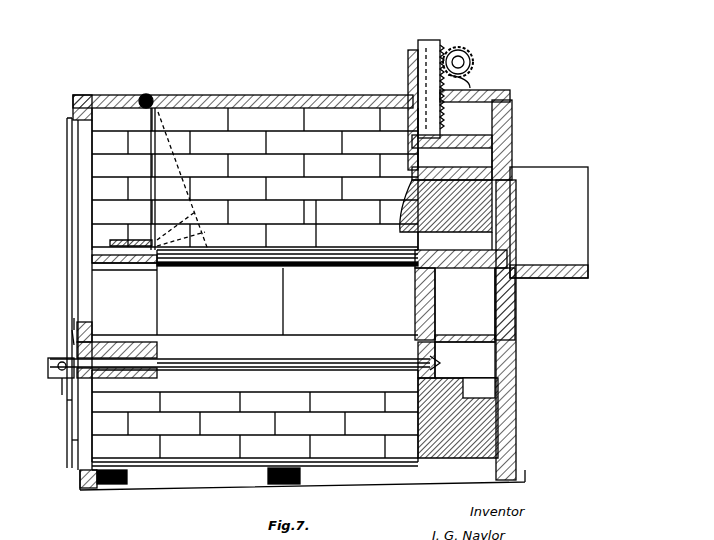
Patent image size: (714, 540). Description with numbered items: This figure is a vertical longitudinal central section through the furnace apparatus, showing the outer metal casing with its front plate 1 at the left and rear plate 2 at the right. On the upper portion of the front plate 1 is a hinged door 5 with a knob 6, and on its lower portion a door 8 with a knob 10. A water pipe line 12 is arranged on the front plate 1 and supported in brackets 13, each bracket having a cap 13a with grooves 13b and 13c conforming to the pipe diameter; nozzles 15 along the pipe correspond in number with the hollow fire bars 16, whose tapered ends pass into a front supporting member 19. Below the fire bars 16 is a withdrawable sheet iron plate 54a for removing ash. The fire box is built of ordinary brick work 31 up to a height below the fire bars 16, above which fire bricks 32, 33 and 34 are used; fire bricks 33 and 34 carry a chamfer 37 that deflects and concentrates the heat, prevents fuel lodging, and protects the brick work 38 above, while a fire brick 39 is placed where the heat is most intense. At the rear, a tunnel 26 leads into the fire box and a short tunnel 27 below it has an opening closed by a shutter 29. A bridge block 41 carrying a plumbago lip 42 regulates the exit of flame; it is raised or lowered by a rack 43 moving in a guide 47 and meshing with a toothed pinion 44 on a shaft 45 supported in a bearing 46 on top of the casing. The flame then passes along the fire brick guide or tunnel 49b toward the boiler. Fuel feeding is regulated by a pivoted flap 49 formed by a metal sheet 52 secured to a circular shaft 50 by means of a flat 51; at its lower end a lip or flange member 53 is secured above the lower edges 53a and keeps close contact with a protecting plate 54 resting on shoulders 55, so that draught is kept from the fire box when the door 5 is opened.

The front plate 1 is at (78, 478).
The rear plate 2 is at (512, 143).
The door 5 is at (70, 215).
The knob 6 is at (72, 247).
The door 8 is at (78, 452).
The knob 10 is at (72, 430).
The pipe line 12 is at (64, 378).
The bracket 13 is at (50, 366).
The cap 13a is at (66, 360).
The groove 13b is at (70, 330).
The groove 13c is at (74, 320).
The nozzle 15 is at (68, 390).
The fire bar 16 is at (210, 358).
The front supporting member 19 is at (150, 350).
The tunnel 26 is at (465, 295).
The short tunnel 27 is at (456, 356).
The shutter 29 is at (512, 338).
The brick work 31 is at (255, 416).
The fire brick 32 is at (362, 353).
The fire brick 33 is at (255, 301).
The fire brick 34 is at (348, 300).
The chamfer 37 is at (326, 262).
The brick work 38 is at (255, 179).
The fire brick 39 is at (329, 223).
The bridge block 41 is at (412, 172).
The plumbago lip 42 is at (400, 224).
The rack 43 is at (430, 42).
The toothed pinion 44 is at (466, 60).
The shaft 45 is at (466, 68).
The bearing 46 is at (470, 84).
The guide 47 is at (408, 64).
The flap 49 is at (150, 188).
The fire brick guide or tunnel 49b is at (572, 256).
The circular shaft 50 is at (150, 98).
The flat 51 is at (157, 104).
The metal sheet 52 is at (160, 136).
The lip or flange member 53 is at (126, 240).
The lower edge 53a is at (162, 242).
The protecting plate 54 is at (104, 268).
The sheet iron plate 54a is at (195, 462).
The shoulder 55 is at (143, 268).